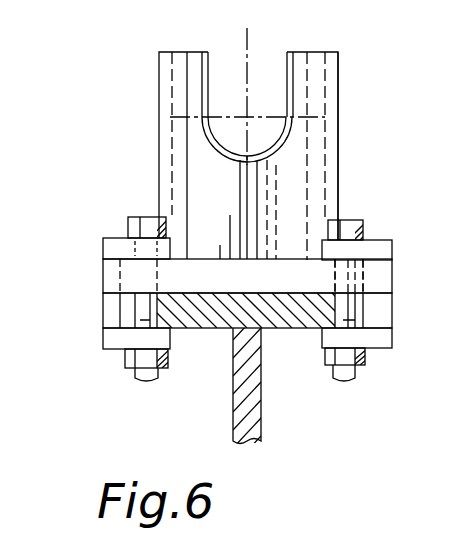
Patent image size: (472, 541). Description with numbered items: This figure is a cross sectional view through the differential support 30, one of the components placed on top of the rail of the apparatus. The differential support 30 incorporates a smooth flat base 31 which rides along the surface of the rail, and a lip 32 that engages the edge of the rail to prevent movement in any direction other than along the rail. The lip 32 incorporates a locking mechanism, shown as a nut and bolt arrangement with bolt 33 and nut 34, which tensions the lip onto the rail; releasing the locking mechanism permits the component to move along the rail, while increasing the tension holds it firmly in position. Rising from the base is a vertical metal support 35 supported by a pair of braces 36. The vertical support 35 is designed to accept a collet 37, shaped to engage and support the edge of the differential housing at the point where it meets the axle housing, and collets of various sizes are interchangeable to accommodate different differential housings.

The differential support 30 is at (159, 173).
The base 31 is at (103, 280).
The lip 32 is at (386, 328).
The bolt 33 is at (362, 382).
The nut 34 is at (367, 363).
The vertical metal support 35 is at (338, 122).
The braces 36 is at (327, 73).
The collet 37 is at (205, 73).